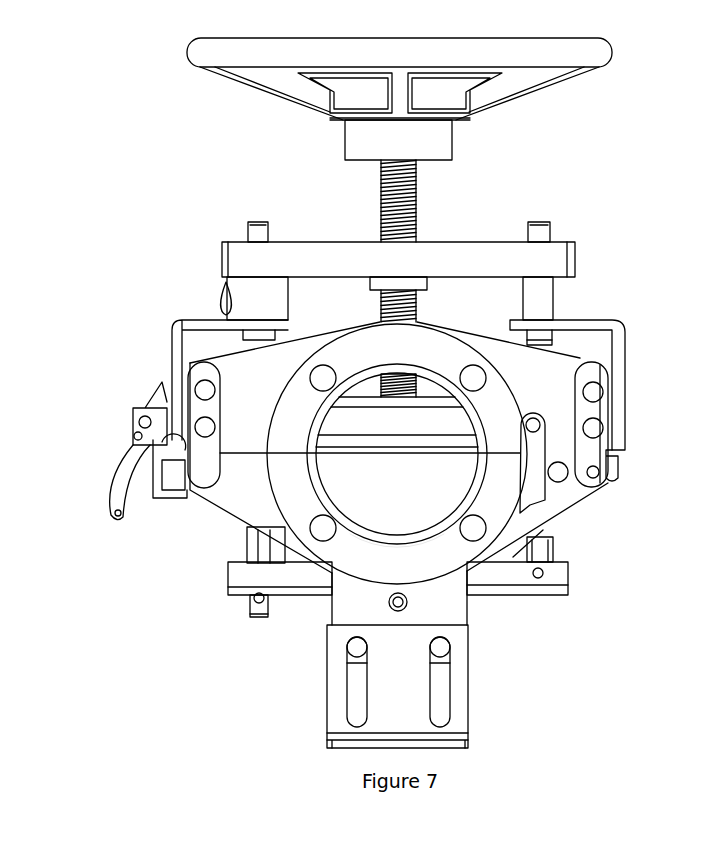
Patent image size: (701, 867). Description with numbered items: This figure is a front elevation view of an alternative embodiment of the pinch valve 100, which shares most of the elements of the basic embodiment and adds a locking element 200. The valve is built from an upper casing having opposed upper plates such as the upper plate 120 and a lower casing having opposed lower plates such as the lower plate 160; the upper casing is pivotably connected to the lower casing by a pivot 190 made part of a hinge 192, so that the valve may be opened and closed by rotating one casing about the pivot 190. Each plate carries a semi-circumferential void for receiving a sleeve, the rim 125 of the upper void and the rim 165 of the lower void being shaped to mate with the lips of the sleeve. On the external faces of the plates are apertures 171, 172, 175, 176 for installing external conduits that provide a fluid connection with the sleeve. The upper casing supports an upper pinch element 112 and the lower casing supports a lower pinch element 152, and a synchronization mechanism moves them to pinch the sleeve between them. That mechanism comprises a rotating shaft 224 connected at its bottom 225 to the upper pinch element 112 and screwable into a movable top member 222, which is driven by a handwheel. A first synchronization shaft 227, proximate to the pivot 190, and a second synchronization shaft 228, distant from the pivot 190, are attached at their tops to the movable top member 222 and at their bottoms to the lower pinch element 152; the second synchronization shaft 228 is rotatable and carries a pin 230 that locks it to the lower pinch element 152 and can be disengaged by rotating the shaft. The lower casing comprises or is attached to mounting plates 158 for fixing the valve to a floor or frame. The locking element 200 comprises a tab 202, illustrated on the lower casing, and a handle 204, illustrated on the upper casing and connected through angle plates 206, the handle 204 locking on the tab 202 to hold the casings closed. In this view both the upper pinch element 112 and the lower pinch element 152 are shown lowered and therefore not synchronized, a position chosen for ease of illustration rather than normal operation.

The pinch valve 100 is at (206, 187).
The upper pinch element 112 is at (428, 442).
The upper plate 120 is at (270, 391).
The rim 125 is at (430, 375).
The lower pinch element 152 is at (527, 578).
The mounting plates 158 is at (470, 713).
The lower plate 160 is at (263, 500).
The rim 165 is at (430, 532).
The aperture 171 is at (483, 370).
The aperture 172 is at (323, 377).
The aperture 175 is at (473, 528).
The aperture 176 is at (323, 528).
The pivot 190 is at (596, 474).
The hinge 192 is at (593, 408).
The locking element 200 is at (120, 437).
The tab 202 is at (175, 473).
The handle 204 is at (111, 490).
The angle plates 206 is at (133, 420).
The movable top member 222 is at (468, 258).
The rotating shaft 224 is at (382, 218).
The bottom of rotating shaft 225 is at (398, 397).
The first synchronization shaft 227 is at (552, 527).
The second synchronization shaft 228 is at (258, 547).
The pin 230 is at (250, 597).